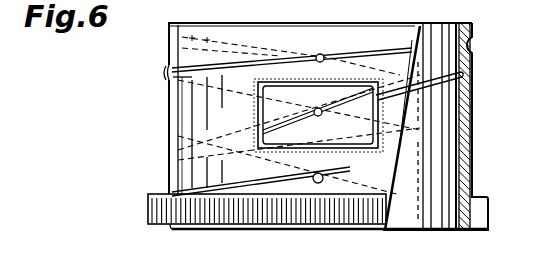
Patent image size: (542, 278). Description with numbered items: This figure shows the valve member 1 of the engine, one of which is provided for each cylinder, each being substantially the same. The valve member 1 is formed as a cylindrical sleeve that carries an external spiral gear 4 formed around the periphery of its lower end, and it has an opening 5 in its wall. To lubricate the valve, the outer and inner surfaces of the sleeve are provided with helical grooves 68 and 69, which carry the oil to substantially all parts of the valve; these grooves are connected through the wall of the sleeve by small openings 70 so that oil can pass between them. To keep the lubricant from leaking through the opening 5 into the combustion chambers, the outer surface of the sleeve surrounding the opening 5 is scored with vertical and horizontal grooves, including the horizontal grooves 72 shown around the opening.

The valve member 1 is at (168, 108).
The spiral gear 4 is at (150, 206).
The opening 5 is at (312, 92).
The helical groove 68 is at (166, 70).
The helical groove 69 is at (400, 75).
The opening 70 is at (320, 54).
The horizontal groove 72 is at (288, 77).